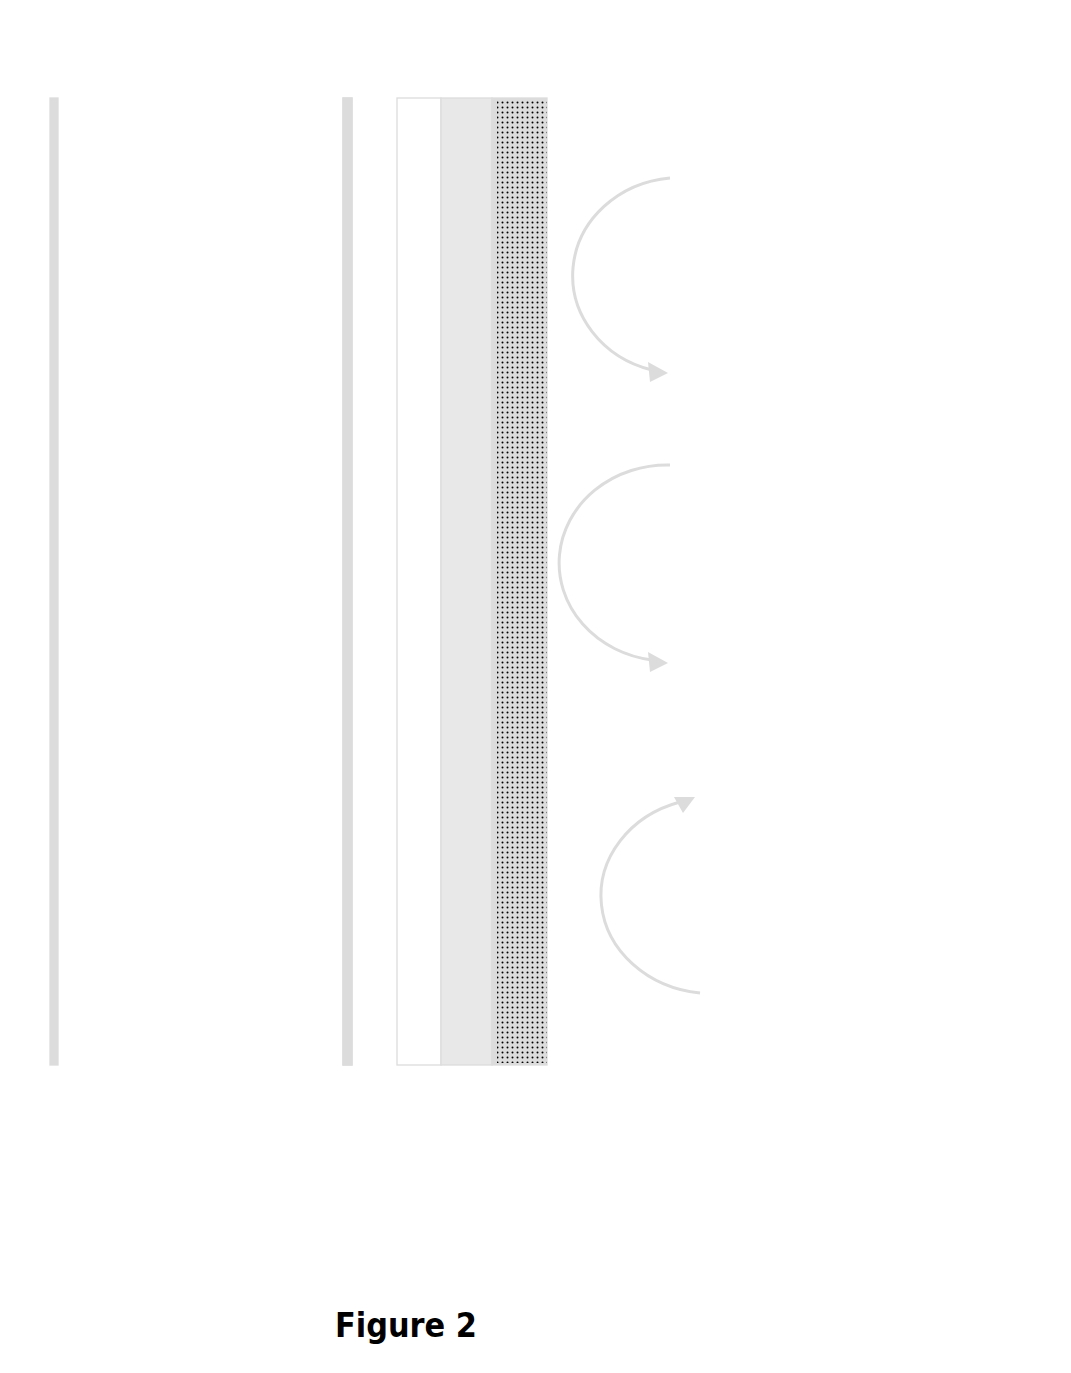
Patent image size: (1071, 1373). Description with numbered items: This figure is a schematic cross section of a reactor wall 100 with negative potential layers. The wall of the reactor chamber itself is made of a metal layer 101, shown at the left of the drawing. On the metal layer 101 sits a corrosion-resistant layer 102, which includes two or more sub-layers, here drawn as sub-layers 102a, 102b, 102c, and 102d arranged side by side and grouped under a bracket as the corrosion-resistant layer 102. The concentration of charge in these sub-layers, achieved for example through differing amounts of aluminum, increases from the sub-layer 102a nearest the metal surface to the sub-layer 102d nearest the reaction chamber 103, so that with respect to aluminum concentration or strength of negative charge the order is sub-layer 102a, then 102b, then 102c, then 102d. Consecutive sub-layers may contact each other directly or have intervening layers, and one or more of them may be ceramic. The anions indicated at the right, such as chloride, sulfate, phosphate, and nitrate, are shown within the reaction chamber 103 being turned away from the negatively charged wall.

The reactor wall 100 is at (556, 80).
The metal layer 101 is at (165, 108).
The corrosion-resistant layer 102 is at (543, 80).
The sub-layer 102a is at (378, 1060).
The sub-layer 102b is at (425, 1053).
The sub-layer 102c is at (463, 1053).
The sub-layer 102d is at (523, 1067).
The reaction chamber 103 is at (722, 588).